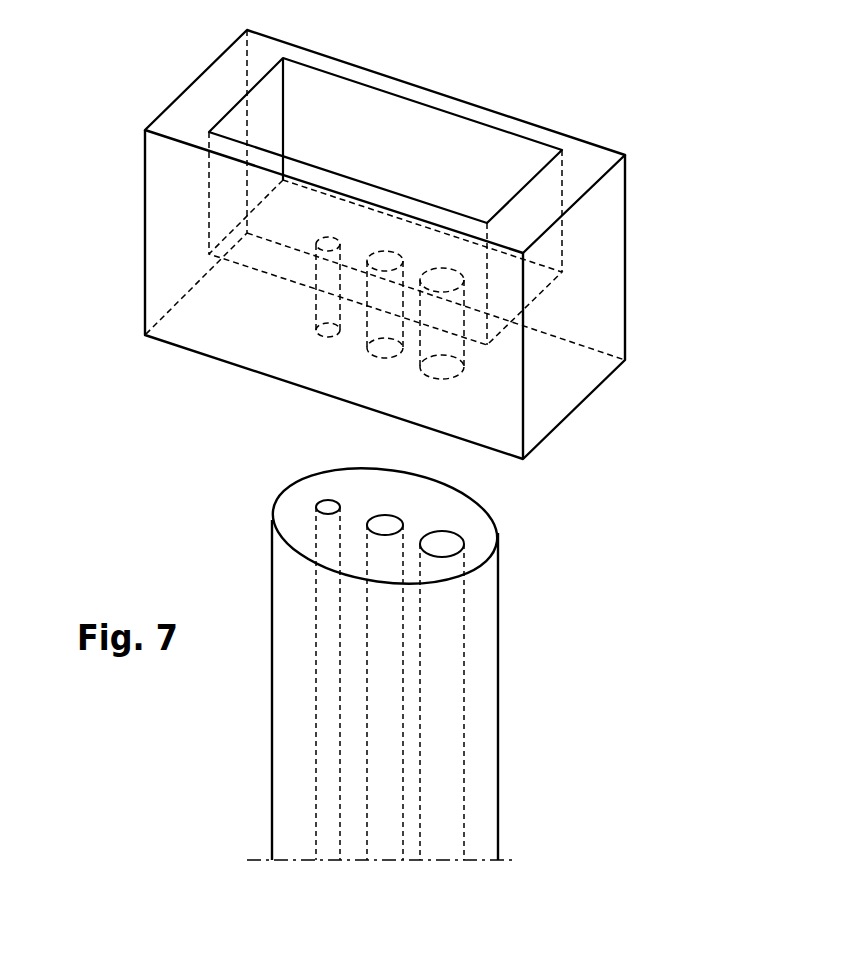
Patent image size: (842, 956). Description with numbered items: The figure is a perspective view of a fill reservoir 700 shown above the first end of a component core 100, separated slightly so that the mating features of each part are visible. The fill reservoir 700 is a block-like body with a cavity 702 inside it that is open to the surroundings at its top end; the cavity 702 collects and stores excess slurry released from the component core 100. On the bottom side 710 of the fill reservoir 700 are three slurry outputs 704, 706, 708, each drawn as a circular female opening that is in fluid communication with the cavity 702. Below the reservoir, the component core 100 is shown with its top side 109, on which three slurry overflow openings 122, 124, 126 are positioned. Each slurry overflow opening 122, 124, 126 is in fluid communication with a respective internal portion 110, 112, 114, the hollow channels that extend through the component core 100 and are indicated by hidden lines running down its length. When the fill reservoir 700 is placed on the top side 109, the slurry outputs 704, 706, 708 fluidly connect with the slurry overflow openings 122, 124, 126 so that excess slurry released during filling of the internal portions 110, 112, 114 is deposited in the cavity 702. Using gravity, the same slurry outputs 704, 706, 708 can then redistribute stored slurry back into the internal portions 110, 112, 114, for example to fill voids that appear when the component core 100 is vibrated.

The component core 100 is at (392, 657).
The top side 109 is at (307, 532).
The internal portion 110 is at (329, 503).
The internal portion 112 is at (450, 545).
The internal portion 114 is at (388, 518).
The slurry overflow opening 122 is at (241, 673).
The slurry overflow opening 124 is at (521, 695).
The slurry overflow opening 126 is at (484, 675).
The fill reservoir 700 is at (454, 244).
The cavity 702 is at (357, 145).
The slurry output 704 is at (327, 307).
The slurry output 706 is at (373, 328).
The slurry output 708 is at (443, 343).
The bottom side 710 is at (588, 365).